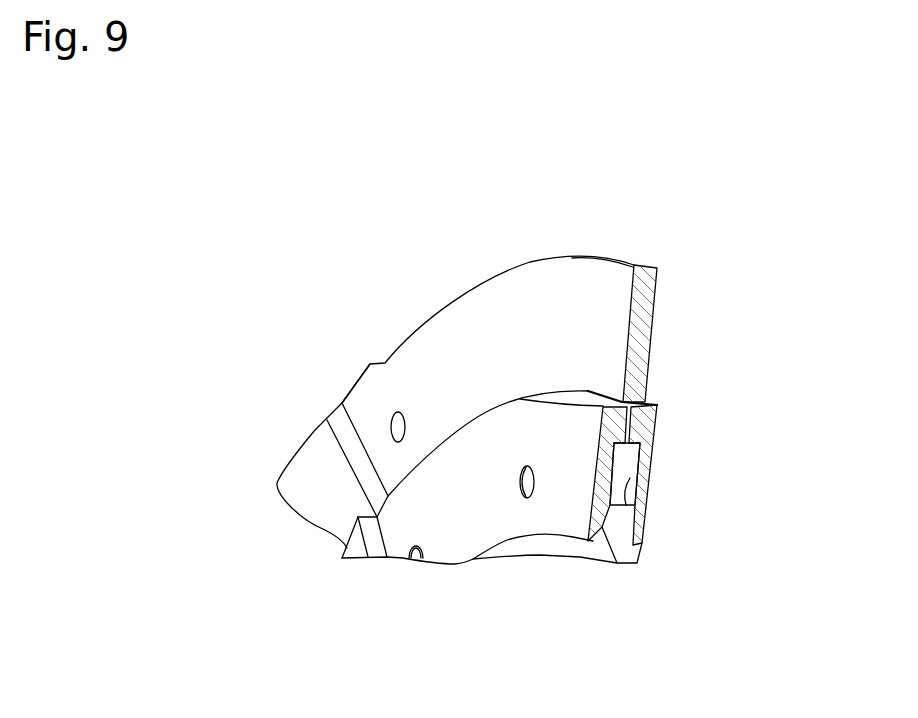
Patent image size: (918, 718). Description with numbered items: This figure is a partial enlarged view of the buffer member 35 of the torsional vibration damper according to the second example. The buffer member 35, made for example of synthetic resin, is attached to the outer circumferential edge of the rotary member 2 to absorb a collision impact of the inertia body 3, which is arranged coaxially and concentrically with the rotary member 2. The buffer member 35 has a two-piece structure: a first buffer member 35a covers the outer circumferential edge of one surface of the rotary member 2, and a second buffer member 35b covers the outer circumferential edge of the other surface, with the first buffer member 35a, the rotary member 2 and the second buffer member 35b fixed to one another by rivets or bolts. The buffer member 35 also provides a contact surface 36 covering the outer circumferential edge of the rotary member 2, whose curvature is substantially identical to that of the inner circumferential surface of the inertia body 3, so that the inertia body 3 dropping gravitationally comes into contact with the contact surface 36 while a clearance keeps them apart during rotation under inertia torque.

The rotary member 2 is at (600, 548).
The inertia body 3 is at (579, 270).
The buffer member 35 is at (459, 359).
The first buffer member 35a is at (623, 402).
The second buffer member 35b is at (648, 428).
The contact surface 36 is at (592, 390).